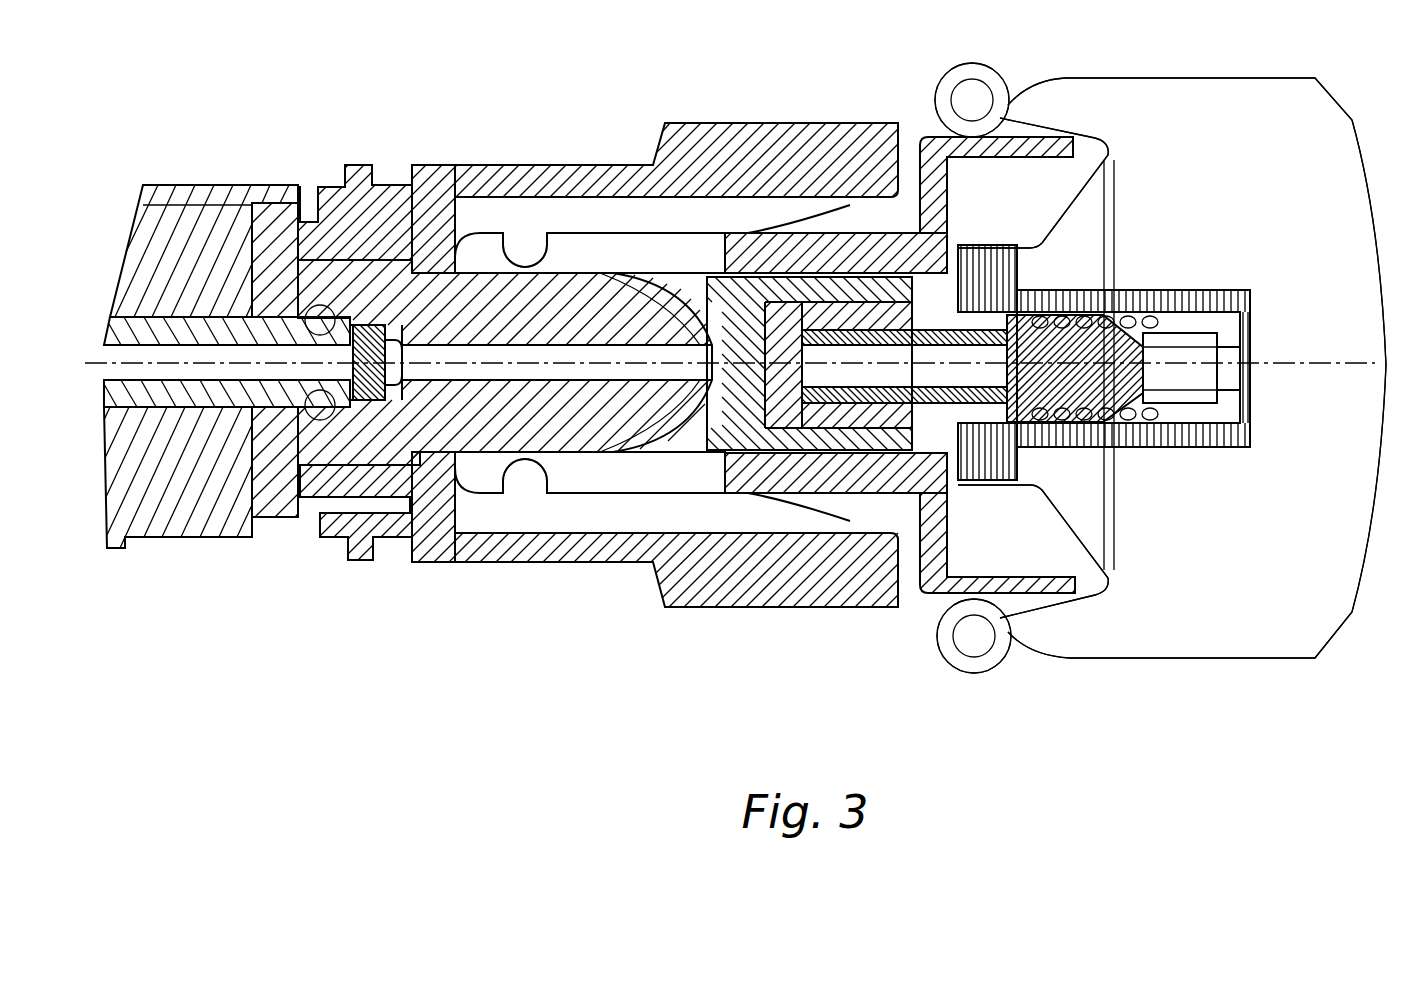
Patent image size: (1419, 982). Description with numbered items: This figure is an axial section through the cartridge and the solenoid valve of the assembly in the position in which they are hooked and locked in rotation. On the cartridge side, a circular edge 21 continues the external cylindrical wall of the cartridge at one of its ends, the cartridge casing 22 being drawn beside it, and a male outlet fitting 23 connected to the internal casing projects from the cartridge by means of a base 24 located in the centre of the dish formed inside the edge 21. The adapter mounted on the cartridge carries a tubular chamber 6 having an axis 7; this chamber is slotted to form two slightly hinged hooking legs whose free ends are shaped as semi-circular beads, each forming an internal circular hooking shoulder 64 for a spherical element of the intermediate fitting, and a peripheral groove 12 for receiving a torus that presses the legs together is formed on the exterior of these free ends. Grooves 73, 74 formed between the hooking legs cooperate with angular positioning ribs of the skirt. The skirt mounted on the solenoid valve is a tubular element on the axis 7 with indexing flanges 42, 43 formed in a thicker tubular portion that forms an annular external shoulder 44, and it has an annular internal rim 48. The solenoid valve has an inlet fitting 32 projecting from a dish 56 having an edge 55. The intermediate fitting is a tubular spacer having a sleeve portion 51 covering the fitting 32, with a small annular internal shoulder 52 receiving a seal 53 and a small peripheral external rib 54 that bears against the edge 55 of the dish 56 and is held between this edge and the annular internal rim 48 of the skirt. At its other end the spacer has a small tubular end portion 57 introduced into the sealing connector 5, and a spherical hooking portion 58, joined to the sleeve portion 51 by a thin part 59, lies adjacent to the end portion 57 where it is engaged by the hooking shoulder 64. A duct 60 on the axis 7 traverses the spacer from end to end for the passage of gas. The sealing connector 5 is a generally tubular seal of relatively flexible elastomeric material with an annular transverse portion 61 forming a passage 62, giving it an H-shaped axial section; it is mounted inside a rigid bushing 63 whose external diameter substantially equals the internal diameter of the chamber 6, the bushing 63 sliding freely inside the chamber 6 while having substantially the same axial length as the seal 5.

The sealing connector 5 is at (690, 420).
The tubular chamber 6 is at (810, 225).
The axis 7 is at (1355, 368).
The peripheral groove 12 is at (548, 475).
The circular edge 21 is at (975, 645).
The booster shell 22 is at (1133, 663).
The male outlet fitting 23 is at (832, 440).
The base 24 is at (1037, 490).
The inlet fitting 32 is at (200, 400).
The indexing flange 42 is at (731, 175).
The indexing flange 43 is at (700, 597).
The annular external shoulder 44 is at (653, 145).
The annular internal rim 48 is at (465, 240).
The sleeve portion 51 is at (367, 420).
The annular internal shoulder 52 is at (318, 300).
The seal 53 is at (305, 440).
The peripheral external rib 54 is at (408, 250).
The edge 55 is at (400, 230).
The dish 56 is at (272, 235).
The tubular end portion 57 is at (665, 245).
The spherical hooking portion 58 is at (592, 455).
The thin part 59 is at (528, 260).
The duct 60 is at (450, 480).
The annular transverse portion 61 is at (840, 265).
The passage 62 is at (775, 420).
The rigid bushing 63 is at (868, 430).
The internal circular hooking shoulder 64 is at (600, 290).
The groove 73 is at (615, 250).
The groove 74 is at (573, 478).